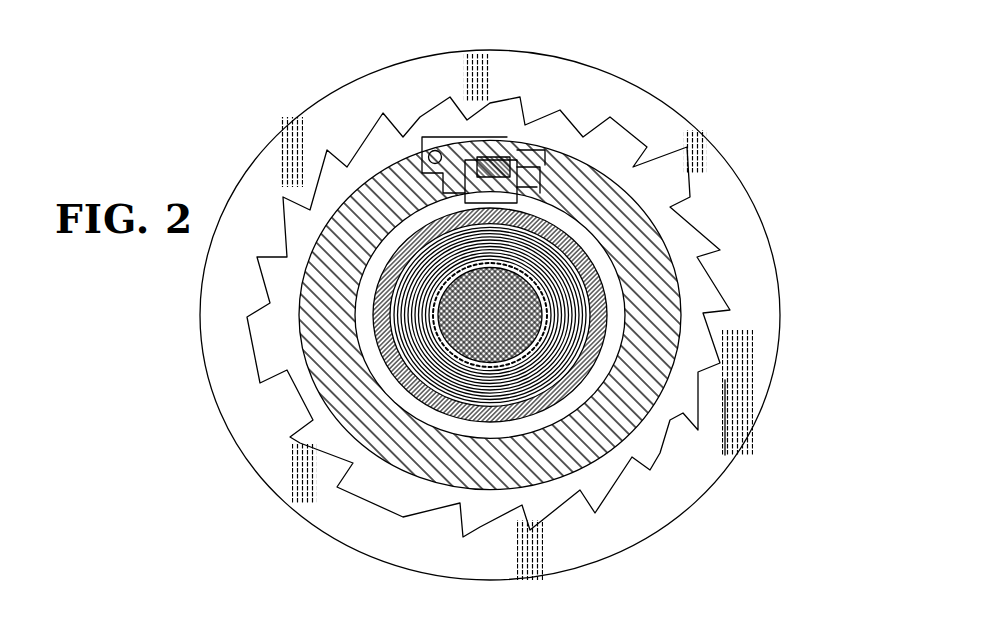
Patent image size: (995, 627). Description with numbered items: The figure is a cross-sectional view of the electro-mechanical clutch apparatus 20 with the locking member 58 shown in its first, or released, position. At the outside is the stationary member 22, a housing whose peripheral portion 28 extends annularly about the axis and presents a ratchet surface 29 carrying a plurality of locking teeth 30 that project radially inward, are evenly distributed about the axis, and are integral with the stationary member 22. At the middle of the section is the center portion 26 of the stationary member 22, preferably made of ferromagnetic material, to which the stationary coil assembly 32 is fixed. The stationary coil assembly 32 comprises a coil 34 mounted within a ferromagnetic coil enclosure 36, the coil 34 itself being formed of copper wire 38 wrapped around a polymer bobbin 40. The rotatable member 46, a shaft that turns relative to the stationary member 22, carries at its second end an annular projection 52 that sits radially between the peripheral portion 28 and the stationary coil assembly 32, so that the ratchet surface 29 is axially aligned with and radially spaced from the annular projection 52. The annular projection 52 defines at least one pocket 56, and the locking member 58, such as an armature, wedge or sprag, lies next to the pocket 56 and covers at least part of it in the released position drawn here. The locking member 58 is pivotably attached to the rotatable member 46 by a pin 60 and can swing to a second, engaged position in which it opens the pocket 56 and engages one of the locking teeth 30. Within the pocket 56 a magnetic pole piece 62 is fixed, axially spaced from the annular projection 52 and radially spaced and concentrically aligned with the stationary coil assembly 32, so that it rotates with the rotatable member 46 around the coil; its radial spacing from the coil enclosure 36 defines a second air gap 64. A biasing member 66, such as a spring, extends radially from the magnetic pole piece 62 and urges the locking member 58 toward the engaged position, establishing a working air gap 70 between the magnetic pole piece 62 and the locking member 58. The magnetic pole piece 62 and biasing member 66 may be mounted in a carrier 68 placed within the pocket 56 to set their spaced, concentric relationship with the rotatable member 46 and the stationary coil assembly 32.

The electro-mechanical clutch apparatus 20 is at (786, 142).
The stationary member 22 is at (783, 338).
The center portion 26 is at (440, 378).
The peripheral portion 28 is at (780, 415).
The ratchet surface 29 is at (657, 458).
The locking teeth 30 is at (697, 410).
The stationary coil assembly 32 is at (400, 347).
The coil 34 is at (470, 380).
The coil enclosure 36 is at (425, 295).
The copper wire 38 is at (430, 298).
The polymer bobbin 40 is at (437, 262).
The rotatable member 46 is at (663, 294).
The annular projection 52 is at (643, 175).
The pocket 56 is at (520, 160).
The locking member 58 is at (473, 157).
The pin 60 is at (437, 137).
The magnetic pole piece 62 is at (520, 152).
The second air gap 64 is at (517, 207).
The biasing member 66 is at (497, 157).
The carrier 68 is at (520, 187).
The working air gap 70 is at (507, 157).